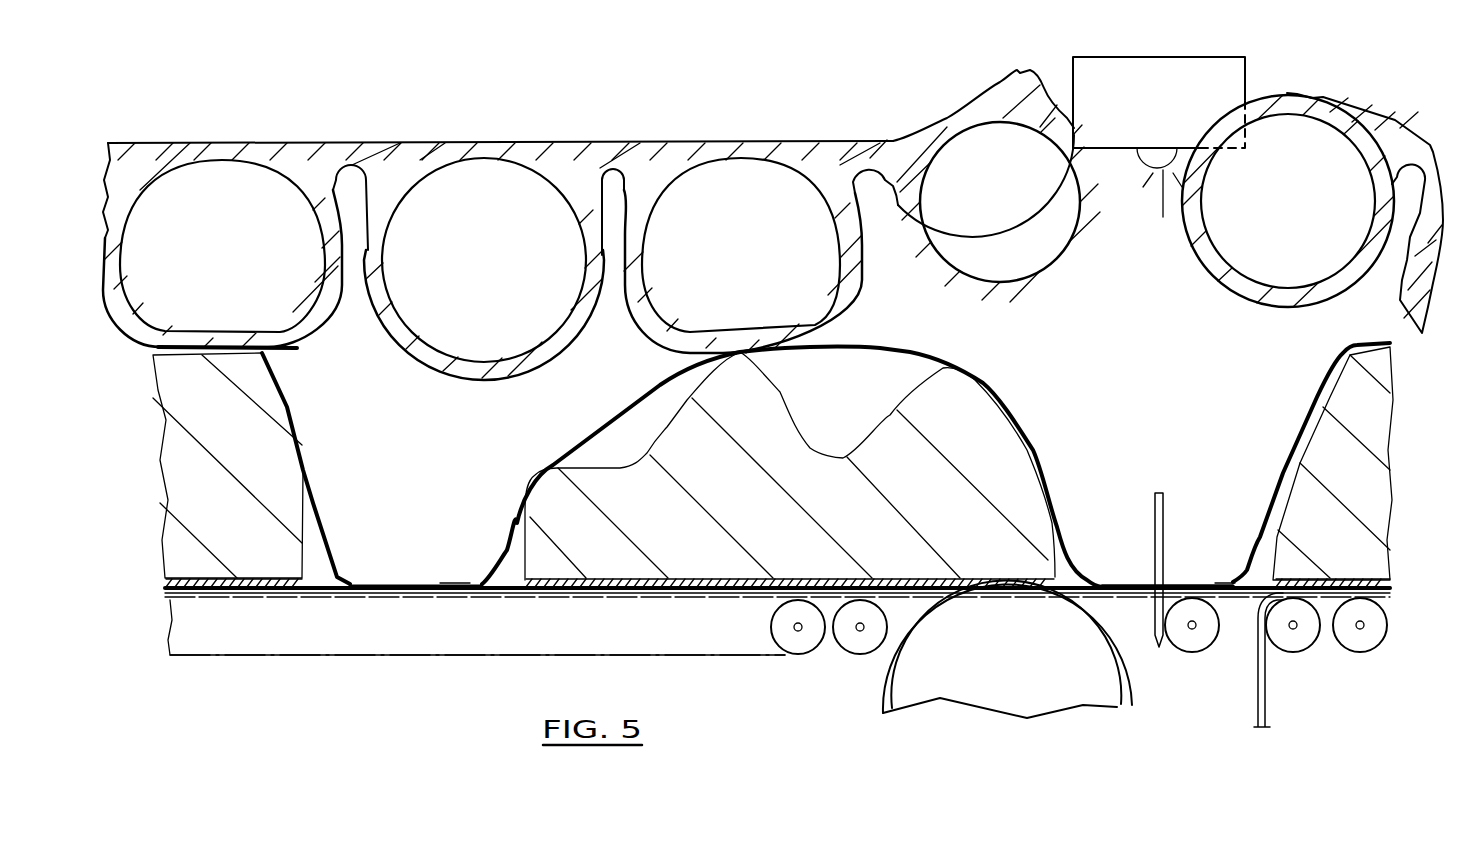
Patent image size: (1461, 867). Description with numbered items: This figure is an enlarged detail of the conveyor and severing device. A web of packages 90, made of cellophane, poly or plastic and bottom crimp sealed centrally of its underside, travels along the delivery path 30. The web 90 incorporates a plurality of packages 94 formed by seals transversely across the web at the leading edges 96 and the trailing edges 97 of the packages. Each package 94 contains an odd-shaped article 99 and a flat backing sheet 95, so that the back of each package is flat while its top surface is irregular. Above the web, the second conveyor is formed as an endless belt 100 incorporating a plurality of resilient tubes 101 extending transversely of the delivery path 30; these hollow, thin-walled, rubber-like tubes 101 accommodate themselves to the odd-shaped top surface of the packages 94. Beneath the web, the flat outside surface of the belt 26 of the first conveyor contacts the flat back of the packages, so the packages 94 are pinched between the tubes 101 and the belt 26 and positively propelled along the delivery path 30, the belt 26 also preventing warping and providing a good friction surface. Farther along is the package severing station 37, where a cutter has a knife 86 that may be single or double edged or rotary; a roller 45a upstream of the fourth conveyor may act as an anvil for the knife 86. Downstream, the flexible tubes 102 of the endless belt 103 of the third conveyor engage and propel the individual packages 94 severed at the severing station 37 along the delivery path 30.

The endless belt 100 is at (583, 157).
The resilient tubes 101 is at (440, 375).
The flexible tubes 102 is at (1350, 126).
The endless belt 103 is at (1427, 143).
The packages 94 is at (290, 412).
The odd-shaped article 99 is at (977, 420).
The flat backing sheet 95 is at (690, 570).
The web of packages 90 is at (403, 580).
The leading edges 96 is at (363, 580).
The trailing edges 97 is at (453, 580).
The delivery path 30 is at (478, 457).
The knife 86 is at (1163, 533).
The package severing station 37 is at (1180, 472).
The belt 26 is at (1088, 630).
The roller 45a is at (1198, 642).